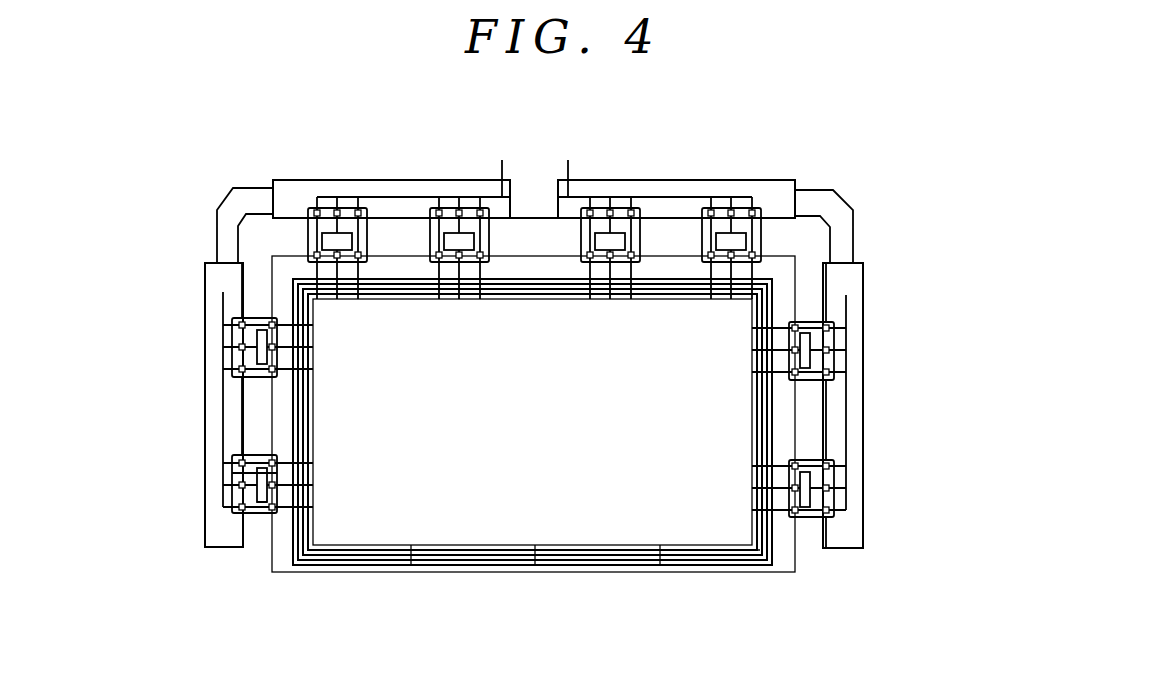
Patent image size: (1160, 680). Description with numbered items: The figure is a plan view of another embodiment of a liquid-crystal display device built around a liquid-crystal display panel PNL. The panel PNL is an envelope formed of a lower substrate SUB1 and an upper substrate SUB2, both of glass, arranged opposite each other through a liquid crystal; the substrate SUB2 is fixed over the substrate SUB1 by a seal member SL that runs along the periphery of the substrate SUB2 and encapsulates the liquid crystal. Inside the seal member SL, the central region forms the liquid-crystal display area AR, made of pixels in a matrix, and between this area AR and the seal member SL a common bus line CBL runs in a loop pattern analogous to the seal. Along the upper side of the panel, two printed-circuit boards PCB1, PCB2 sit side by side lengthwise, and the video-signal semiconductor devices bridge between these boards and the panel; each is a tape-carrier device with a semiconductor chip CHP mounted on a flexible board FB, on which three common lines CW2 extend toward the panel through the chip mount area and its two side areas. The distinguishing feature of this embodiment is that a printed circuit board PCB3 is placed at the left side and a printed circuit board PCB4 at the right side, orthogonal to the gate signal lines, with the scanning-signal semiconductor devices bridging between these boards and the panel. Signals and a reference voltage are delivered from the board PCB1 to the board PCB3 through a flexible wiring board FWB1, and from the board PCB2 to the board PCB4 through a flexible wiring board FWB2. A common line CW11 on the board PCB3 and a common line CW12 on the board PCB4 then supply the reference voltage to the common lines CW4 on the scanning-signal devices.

The liquid-crystal display panel PNL is at (268, 257).
The liquid-crystal display area AR is at (532, 422).
The seal member SL is at (362, 553).
The substrate SUB1 is at (488, 570).
The substrate SUB2 is at (598, 563).
The common bus line CBL is at (707, 550).
The printed-circuit board PCB1 is at (322, 197).
The printed-circuit board PCB2 is at (775, 187).
The printed circuit board PCB3 is at (225, 542).
The printed circuit board PCB4 is at (842, 548).
The flexible wiring board FWB1 is at (233, 203).
The flexible wiring board FWB2 is at (840, 207).
The common line CW2 is at (582, 241).
The common line CW4 is at (257, 322).
The common line CW11 is at (223, 408).
The common line CW12 is at (847, 411).
The flexible board FB is at (242, 472).
The semiconductor chip CHP is at (258, 513).